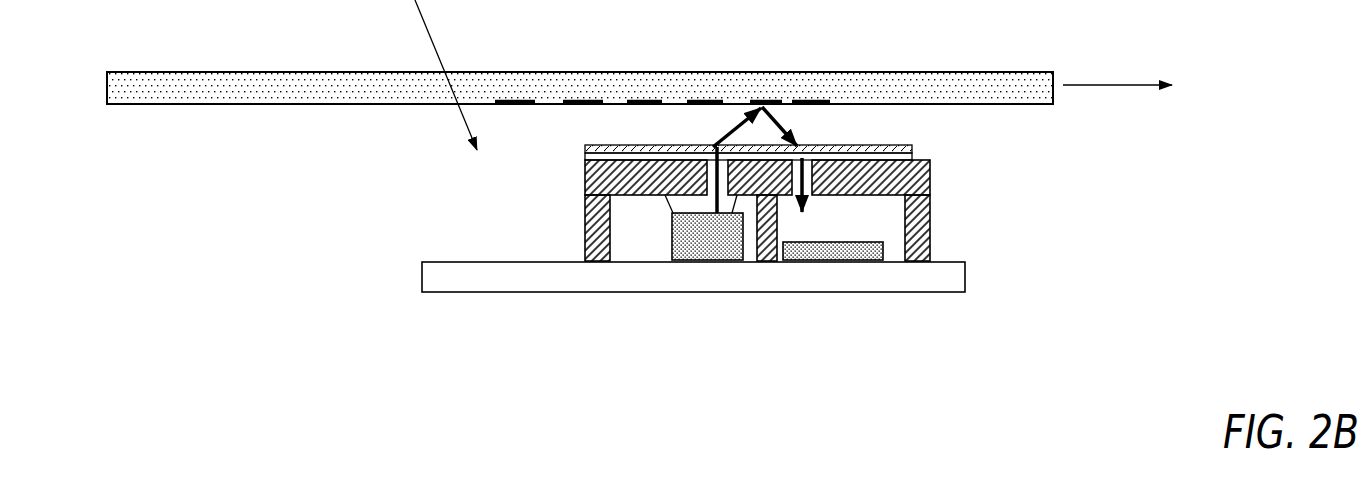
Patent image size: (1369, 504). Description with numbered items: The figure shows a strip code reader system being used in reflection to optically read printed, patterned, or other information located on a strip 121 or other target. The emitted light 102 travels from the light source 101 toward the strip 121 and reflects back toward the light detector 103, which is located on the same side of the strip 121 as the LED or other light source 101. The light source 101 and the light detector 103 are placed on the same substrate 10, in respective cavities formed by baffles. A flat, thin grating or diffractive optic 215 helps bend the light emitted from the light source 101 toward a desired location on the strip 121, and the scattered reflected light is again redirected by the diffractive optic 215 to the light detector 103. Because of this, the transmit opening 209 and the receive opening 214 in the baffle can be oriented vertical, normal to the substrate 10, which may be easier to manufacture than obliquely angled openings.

The substrate 10 is at (834, 283).
The light source 101 is at (669, 238).
The light 102 is at (744, 144).
The light detector 103 is at (886, 252).
The strip 121 is at (995, 72).
The transmit opening 209 is at (804, 194).
The receive opening 214 is at (816, 178).
The diffractive optic 215 is at (914, 150).